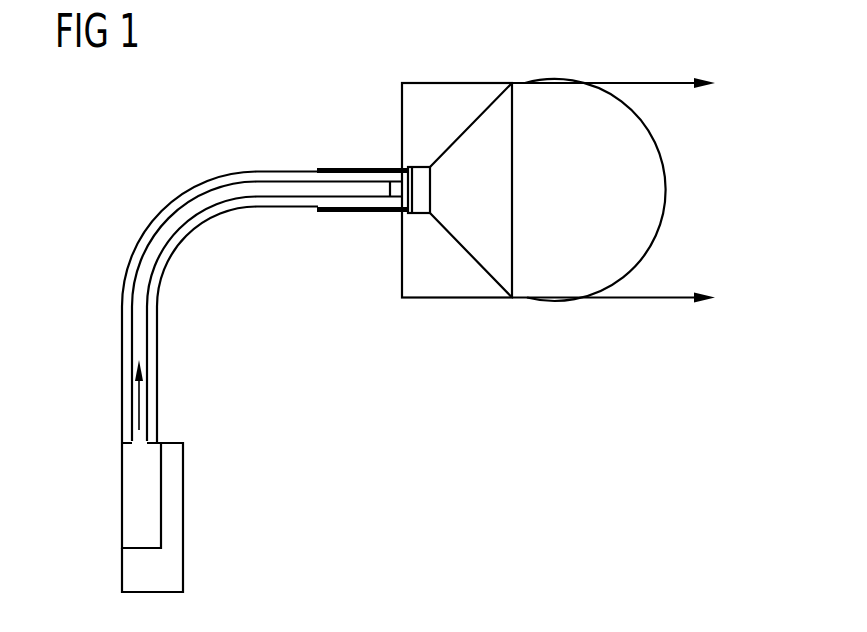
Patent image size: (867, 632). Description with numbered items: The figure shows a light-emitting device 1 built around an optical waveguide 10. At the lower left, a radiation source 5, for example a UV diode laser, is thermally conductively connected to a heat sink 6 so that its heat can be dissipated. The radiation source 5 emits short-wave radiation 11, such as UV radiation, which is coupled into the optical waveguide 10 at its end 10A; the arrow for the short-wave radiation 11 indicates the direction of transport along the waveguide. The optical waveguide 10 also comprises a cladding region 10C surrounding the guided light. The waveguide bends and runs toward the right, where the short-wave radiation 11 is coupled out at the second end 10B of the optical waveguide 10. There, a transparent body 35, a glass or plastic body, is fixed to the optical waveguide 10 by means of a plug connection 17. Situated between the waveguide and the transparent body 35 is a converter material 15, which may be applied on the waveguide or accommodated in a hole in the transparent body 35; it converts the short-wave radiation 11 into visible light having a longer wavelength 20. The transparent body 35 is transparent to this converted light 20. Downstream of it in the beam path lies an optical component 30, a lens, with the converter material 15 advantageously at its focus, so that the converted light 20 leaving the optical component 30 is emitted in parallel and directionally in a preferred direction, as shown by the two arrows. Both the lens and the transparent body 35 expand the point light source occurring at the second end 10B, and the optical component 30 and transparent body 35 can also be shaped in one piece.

The light-emitting device 1 is at (221, 121).
The radiation source 5 is at (135, 478).
The heat sink 6 is at (170, 527).
The optical waveguide 10 is at (230, 269).
The end of the optical waveguide 10A is at (140, 436).
The second end of the optical waveguide 10B is at (390, 188).
The cladding region 10C is at (168, 223).
The short-wave radiation 11 is at (143, 402).
The converter material 15 is at (416, 207).
The plug connection 17 is at (396, 167).
The visible light having a longer wavelength 20 is at (623, 82).
The optical component 30 is at (594, 192).
The transparent body 35 is at (445, 287).